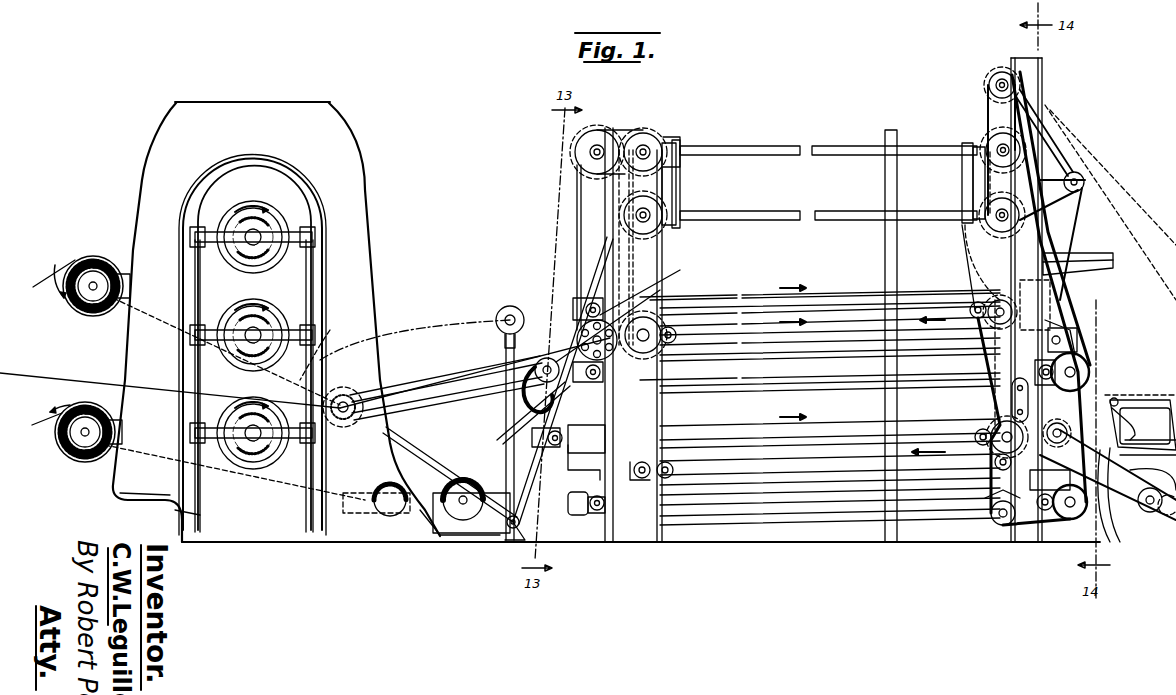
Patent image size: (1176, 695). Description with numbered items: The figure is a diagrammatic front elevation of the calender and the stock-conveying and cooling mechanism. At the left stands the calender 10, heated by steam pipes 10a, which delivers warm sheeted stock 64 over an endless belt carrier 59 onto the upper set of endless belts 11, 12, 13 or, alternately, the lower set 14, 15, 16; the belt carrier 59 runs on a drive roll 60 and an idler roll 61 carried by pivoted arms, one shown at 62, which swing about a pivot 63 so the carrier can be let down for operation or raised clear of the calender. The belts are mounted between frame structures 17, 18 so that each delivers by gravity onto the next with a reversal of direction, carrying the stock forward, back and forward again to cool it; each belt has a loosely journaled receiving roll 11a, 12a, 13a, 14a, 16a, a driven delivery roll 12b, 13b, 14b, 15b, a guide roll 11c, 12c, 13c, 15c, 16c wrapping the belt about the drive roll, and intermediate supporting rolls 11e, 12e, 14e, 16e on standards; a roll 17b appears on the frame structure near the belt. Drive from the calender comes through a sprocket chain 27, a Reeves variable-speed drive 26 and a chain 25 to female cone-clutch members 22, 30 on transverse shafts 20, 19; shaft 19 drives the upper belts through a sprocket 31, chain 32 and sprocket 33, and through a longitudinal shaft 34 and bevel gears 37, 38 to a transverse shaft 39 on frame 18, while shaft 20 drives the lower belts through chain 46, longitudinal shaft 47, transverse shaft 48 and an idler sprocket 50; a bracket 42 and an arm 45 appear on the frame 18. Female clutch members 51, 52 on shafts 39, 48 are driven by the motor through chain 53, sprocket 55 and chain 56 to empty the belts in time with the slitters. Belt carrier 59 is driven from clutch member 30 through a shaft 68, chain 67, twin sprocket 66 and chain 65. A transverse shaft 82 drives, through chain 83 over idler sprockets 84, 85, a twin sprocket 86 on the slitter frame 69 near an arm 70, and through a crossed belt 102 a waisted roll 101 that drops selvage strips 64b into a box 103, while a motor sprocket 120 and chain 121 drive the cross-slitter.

The calender 10 is at (368, 190).
The steam pipes 10a is at (200, 516).
The endless belt 11 is at (840, 298).
The loosely-journaled end roll 11a is at (647, 285).
The guide roll 11c is at (985, 318).
The supporting rolls 11e is at (882, 308).
The endless belt 12 is at (738, 322).
The loosely-journaled end roll 12a is at (1085, 325).
The belt-driving roll 12b is at (660, 356).
The guide roll 12c is at (672, 336).
The supporting rolls 12e is at (856, 340).
The endless belt 13 is at (735, 378).
The loosely-journaled end roll 13a is at (592, 382).
The belt-driving roll 13b is at (1089, 362).
The guide roll 13c is at (854, 374).
The endless belt 14 is at (700, 420).
The loosely-journaled end roll 14a is at (547, 446).
The belt-driving roll 14b is at (990, 425).
The supporting rolls 14e is at (861, 424).
The endless belt 15 is at (787, 450).
The belt-driving roll 15b is at (650, 478).
The guide roll 15c is at (672, 470).
The endless belt 16 is at (790, 488).
The loosely-journaled end roll 16a is at (590, 510).
The guide roll 16c is at (1050, 535).
The supporting rolls 16e is at (859, 505).
The frame structure 17 is at (622, 130).
The belt run 17b is at (975, 302).
The frame structure 18 is at (1043, 105).
The transverse shaft 19 is at (686, 138).
The transverse shaft 20 is at (665, 200).
The female cone-clutch member 22 is at (690, 180).
The sprocket chain 25 is at (580, 276).
The Reeves variable-speed drive 26 is at (440, 470).
The sprocket chain 27 is at (350, 335).
The female cone-clutch member 30 is at (650, 128).
The sprocket 31 is at (700, 155).
The sprocket chain 32 is at (662, 250).
The sprocket 33 is at (662, 322).
The shaft 34 is at (850, 150).
The bevel gear 37 is at (985, 145).
The bevel gear 38 is at (990, 95).
The transverse shaft 39 is at (1008, 150).
The bracket 42 is at (1055, 295).
The arm 45 is at (1080, 252).
The sprocket chain 46 is at (660, 400).
The longitudinal shaft 47 is at (822, 210).
The transverse shaft 48 is at (1020, 218).
The idler sprocket 50 is at (1140, 412).
The female cone-clutch member 51 is at (986, 118).
The female cone-clutch member 52 is at (1040, 200).
The sprocket chain 53 is at (963, 252).
The sprocket 55 is at (965, 222).
The sprocket chain 56 is at (1078, 174).
The endless belt carrier 59 is at (445, 400).
The drive roll 60 is at (500, 418).
The idler roll 61 is at (385, 392).
The arm 62 is at (380, 445).
The pivot 63 is at (505, 538).
The sheeted stock 64 is at (495, 348).
The selvage strips 64b is at (1100, 200).
The sprocket chain 65 is at (548, 328).
The twin sprocket 66 is at (640, 300).
The sprocket chain 67 is at (576, 242).
The shaft 68 is at (590, 152).
The slitter frame 69 is at (1145, 423).
The arm 70 is at (1125, 408).
The transverse shaft 82 is at (1002, 80).
The sprocket chain 83 is at (993, 510).
The idler sprocket 84 is at (1000, 526).
The idler sprocket 85 is at (1075, 410).
The twin sprocket 86 is at (1168, 493).
The waisted roll 101 is at (1086, 180).
The crossed belt 102 is at (1040, 165).
The box 103 is at (1112, 268).
The motor sprocket 120 is at (1160, 520).
The sprocket chain 121 is at (1108, 535).